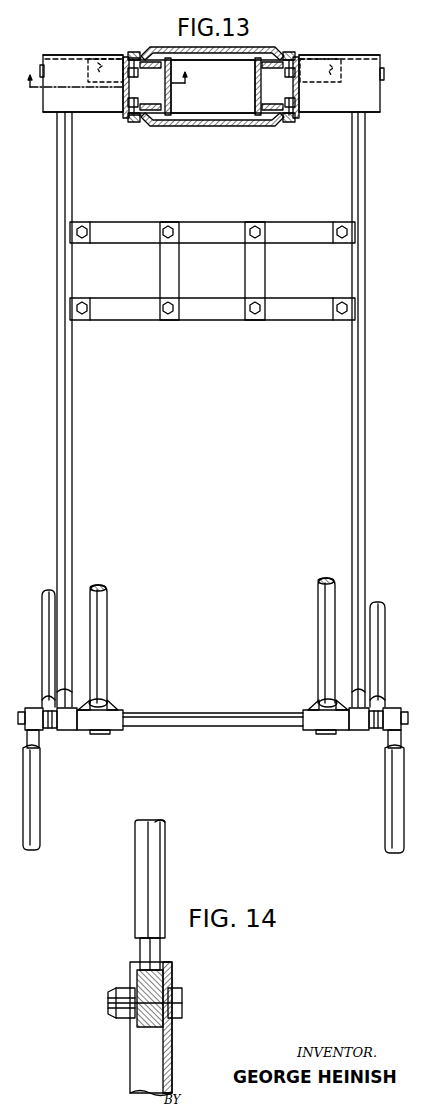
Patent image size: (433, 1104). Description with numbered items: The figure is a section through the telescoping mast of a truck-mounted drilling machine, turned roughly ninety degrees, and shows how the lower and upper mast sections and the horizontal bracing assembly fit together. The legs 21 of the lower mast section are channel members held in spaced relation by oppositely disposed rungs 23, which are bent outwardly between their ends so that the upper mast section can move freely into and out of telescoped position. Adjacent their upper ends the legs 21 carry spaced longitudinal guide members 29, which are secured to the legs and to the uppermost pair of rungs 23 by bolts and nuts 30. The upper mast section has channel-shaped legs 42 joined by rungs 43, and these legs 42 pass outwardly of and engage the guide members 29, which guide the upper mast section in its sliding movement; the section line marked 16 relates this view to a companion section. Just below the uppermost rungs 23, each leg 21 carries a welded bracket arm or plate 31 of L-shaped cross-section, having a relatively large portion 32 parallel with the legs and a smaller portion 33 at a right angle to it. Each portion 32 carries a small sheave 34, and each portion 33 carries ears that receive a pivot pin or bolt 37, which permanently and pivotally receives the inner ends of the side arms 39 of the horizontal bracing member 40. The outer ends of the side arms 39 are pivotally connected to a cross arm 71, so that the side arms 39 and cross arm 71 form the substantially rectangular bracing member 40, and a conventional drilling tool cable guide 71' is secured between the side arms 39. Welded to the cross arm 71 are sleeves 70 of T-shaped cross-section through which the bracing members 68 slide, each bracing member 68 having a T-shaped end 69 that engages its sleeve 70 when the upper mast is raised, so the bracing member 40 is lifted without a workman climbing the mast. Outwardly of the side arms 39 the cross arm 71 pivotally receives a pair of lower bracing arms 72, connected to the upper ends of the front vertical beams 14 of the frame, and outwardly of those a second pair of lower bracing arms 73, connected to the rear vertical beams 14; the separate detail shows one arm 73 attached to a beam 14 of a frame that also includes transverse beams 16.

In FIG. 14, the vertical beams 14 is at (135, 1038).
In FIG. 13, the transverse beams 16 is at (113, 72).
In FIG. 13, the legs 21 is at (123, 96).
In FIG. 13, the rungs 23 is at (282, 50).
In FIG. 13, the guide members 29 is at (153, 69).
In FIG. 13, the bolts and nuts 30 is at (135, 52).
In FIG. 13, the bracket arm or plate 31 is at (41, 103).
In FIG. 13, the portion 32 is at (70, 55).
In FIG. 13, the portion 33 is at (88, 106).
In FIG. 13, the sheave 34 is at (88, 72).
In FIG. 13, the pivot pin or bolt 37 is at (43, 65).
In FIG. 13, the side arms 39 is at (365, 199).
In FIG. 13, the horizontal bracing member 40 is at (375, 383).
In FIG. 13, the legs 42 is at (171, 104).
In FIG. 13, the rungs 43 is at (220, 66).
In FIG. 13, the bracing member 68 is at (107, 606).
In FIG. 13, the T-shape end 69 is at (102, 735).
In FIG. 13, the sleeve 70 is at (110, 703).
In FIG. 13, the cross arm 71 is at (213, 710).
In FIG. 13, the drilling tool cable guide 71' is at (212, 256).
In FIG. 13, the lower bracing arms 72 is at (42, 628).
In FIG. 13, the lower bracing arms 73 is at (40, 790).
In FIG. 14, the lower bracing arms 73 is at (165, 872).